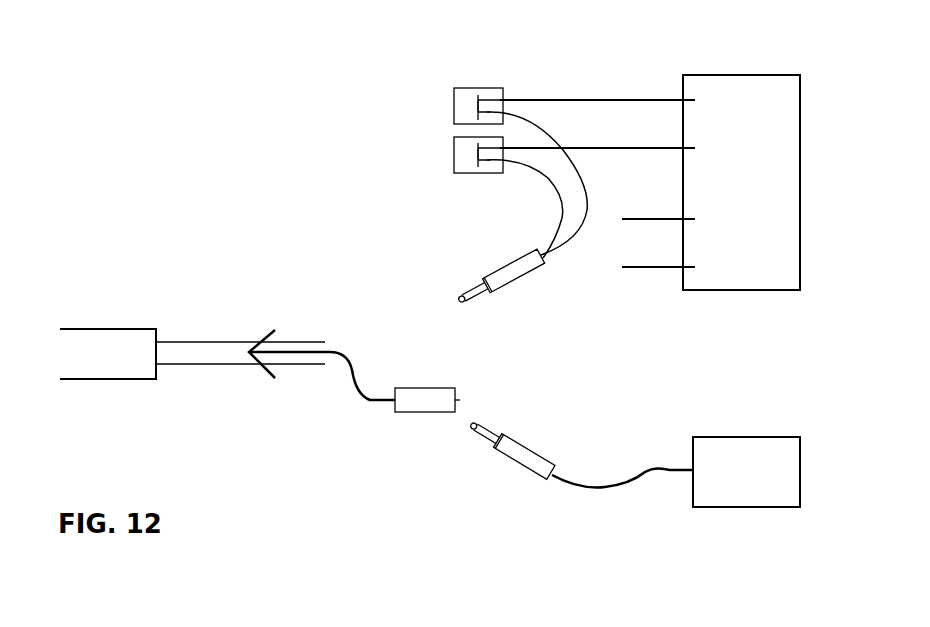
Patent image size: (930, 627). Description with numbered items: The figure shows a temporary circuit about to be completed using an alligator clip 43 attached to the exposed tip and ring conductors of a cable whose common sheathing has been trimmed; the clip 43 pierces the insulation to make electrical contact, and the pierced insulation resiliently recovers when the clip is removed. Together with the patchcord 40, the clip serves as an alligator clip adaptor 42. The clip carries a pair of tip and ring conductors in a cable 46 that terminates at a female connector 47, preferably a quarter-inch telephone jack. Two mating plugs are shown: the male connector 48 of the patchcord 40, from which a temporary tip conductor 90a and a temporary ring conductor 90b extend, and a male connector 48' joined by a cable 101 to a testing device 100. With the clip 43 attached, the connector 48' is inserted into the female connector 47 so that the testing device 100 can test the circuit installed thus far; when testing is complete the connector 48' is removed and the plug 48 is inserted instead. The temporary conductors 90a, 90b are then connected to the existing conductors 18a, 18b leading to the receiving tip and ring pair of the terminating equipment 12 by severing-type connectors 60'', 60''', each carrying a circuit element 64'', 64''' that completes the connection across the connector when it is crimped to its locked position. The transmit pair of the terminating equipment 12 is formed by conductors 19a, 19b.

The terminating equipment 12 is at (698, 73).
The tip conductor 18a is at (657, 100).
The ring conductor 18b is at (623, 148).
The tip conductor 19a is at (657, 219).
The ring conductor 19b is at (623, 267).
The patchcord 40 is at (512, 186).
The alligator clip adaptor 42 is at (336, 378).
The alligator clip 43 is at (267, 330).
The cable 46 is at (383, 404).
The female connector 47 is at (408, 414).
The male connector 48 is at (514, 278).
The male connector 48' is at (530, 449).
The severing-type connector 60'' is at (447, 99).
The severing-type connector 60''' is at (444, 148).
The circuit element 64'' is at (435, 75).
The circuit element 64''' is at (431, 183).
The temporary tip conductor 90a is at (588, 193).
The temporary ring conductor 90b is at (562, 212).
The testing device 100 is at (707, 435).
The cable 101 is at (575, 487).